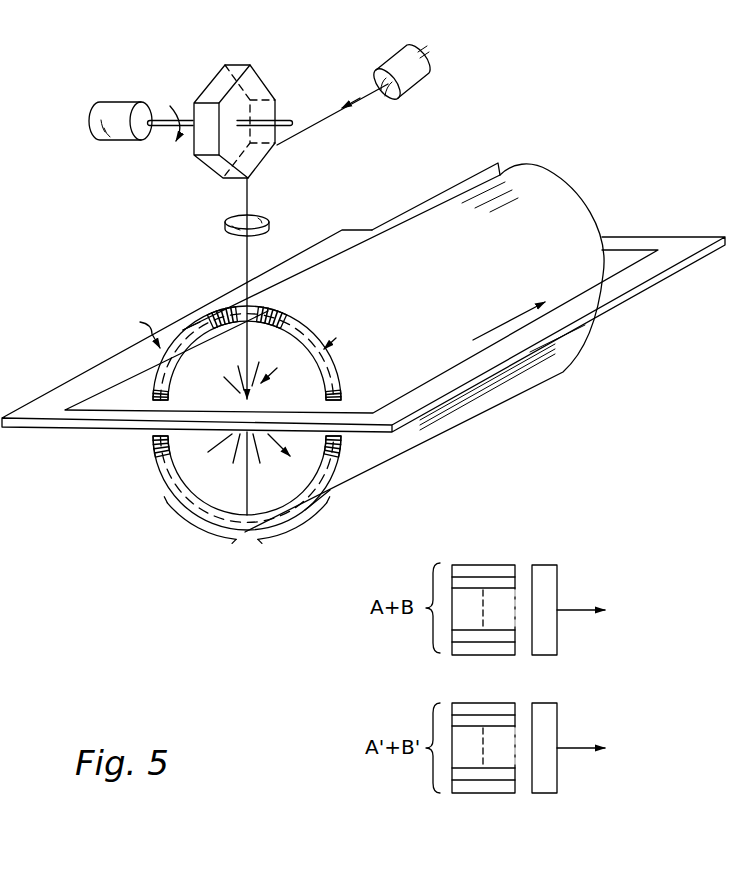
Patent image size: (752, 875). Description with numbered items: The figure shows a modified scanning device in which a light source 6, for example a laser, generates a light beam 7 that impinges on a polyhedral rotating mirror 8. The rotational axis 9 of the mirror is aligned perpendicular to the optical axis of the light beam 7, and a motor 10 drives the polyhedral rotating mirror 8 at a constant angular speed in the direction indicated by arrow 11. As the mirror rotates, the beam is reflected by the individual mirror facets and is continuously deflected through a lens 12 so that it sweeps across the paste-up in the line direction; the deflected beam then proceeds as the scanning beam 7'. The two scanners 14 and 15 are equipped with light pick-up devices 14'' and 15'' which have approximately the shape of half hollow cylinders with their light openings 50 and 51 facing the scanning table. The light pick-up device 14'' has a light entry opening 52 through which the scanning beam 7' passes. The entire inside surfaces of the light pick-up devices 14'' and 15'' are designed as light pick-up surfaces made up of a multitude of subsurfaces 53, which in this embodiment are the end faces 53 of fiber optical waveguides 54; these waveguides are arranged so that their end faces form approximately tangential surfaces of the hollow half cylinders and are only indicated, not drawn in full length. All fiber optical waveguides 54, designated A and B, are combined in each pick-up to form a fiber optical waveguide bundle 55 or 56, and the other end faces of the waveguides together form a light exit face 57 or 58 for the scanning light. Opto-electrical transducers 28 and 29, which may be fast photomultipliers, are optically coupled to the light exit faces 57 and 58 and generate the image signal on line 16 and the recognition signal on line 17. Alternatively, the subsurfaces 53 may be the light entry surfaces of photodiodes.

The light source 6 is at (402, 64).
The light beam 7 is at (332, 114).
The scanning beam 7' is at (221, 288).
The polyhedral rotating mirror 8 is at (262, 81).
The rotational axis 9 is at (287, 120).
The motor 10 is at (120, 105).
The arrow 11 is at (170, 108).
The lens 12 is at (229, 218).
The scanner 14 is at (195, 345).
The light pick-up device 14'' is at (176, 304).
The scanner 15 is at (191, 487).
The light pick-up device 15'' is at (135, 474).
The line 16 is at (571, 612).
The line 17 is at (571, 750).
The opto-electrical transducer 28 is at (553, 580).
The opto-electrical transducer 29 is at (553, 720).
The light opening 50 is at (345, 425).
The light opening 51 is at (328, 464).
The light entry opening 52 is at (273, 267).
The subsurfaces 53 is at (232, 326).
The fiber optical waveguides 54 is at (293, 315).
The fiber optical waveguide bundle 55 is at (470, 590).
The fiber optical waveguide bundle 56 is at (470, 770).
The light exit face 57 is at (517, 590).
The light exit face 58 is at (521, 795).